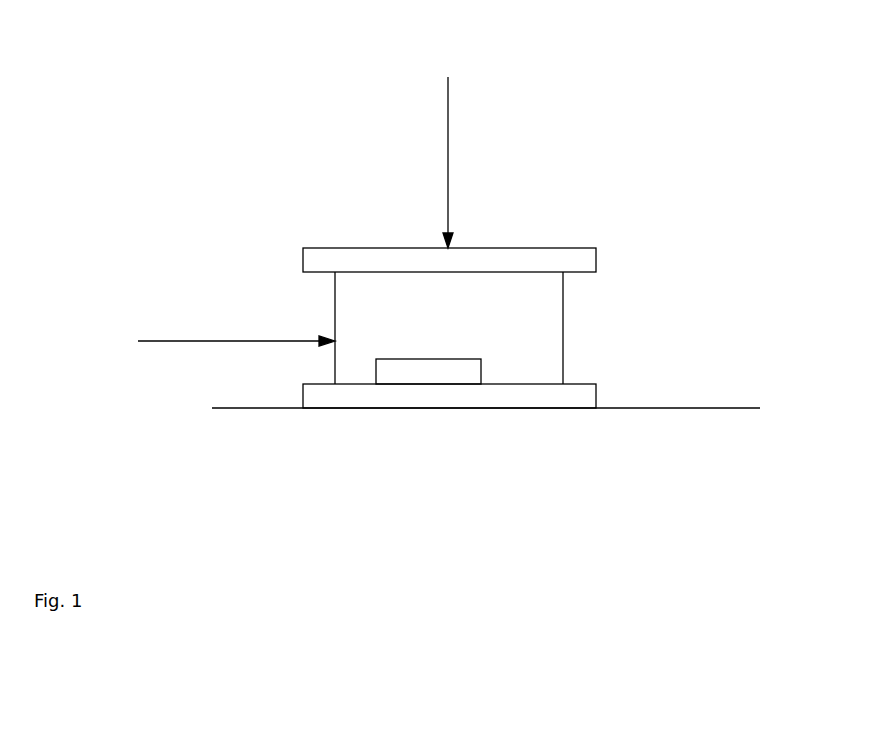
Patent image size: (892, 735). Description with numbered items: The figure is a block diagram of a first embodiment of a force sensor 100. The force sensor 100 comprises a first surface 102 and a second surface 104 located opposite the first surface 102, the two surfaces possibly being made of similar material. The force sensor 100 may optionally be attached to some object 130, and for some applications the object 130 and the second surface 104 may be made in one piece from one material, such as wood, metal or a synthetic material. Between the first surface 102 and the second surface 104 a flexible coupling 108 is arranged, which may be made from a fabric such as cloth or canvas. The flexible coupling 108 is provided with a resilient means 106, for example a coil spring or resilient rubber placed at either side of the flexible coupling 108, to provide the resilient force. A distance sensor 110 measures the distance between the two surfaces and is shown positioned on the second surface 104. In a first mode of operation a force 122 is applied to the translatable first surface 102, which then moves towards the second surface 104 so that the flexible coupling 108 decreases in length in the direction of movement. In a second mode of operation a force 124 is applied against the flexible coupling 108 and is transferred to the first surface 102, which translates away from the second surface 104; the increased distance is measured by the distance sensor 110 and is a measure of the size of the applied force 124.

The force sensor 100 is at (782, 41).
The first surface 102 is at (490, 262).
The second surface 104 is at (502, 395).
The resilient means 106 is at (502, 332).
The flexible coupling 108 is at (335, 295).
The distance sensor 110 is at (397, 372).
The force 122 is at (445, 113).
The force 124 is at (198, 342).
The object 130 is at (730, 408).